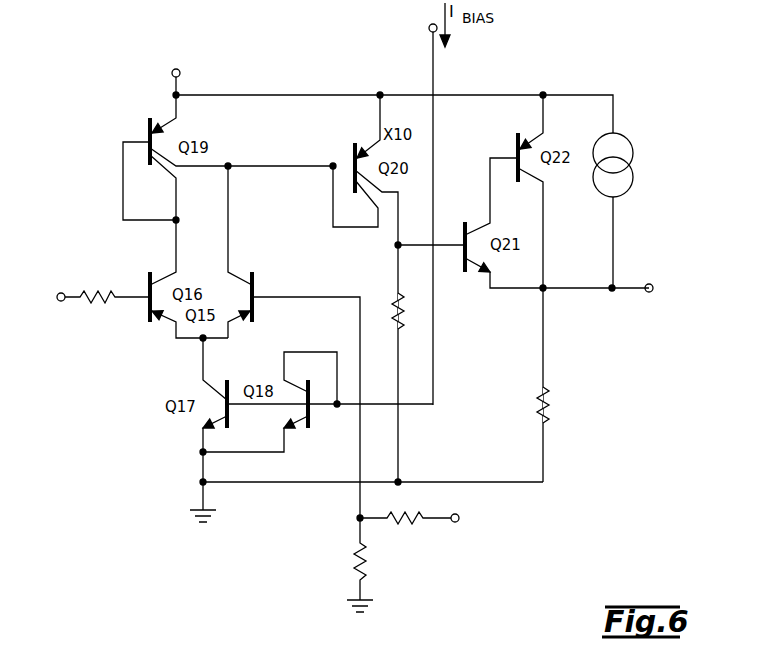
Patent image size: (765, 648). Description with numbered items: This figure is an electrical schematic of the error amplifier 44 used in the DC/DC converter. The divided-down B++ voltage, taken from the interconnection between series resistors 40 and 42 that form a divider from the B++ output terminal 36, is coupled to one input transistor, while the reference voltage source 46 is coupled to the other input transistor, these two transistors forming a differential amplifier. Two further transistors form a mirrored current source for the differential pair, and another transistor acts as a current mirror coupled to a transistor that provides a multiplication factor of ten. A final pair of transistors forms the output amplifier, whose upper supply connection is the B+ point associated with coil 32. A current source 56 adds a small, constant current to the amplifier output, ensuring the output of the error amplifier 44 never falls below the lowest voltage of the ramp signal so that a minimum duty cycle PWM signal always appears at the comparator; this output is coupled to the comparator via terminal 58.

The coil 32 is at (181, 73).
The B++ output terminal 36 is at (455, 514).
The resistor 40 is at (405, 525).
The resistor 42 is at (350, 564).
The error amplifier 44 is at (620, 491).
The reference voltage source 46 is at (61, 292).
The current source 56 is at (624, 148).
The terminal 58 is at (653, 286).